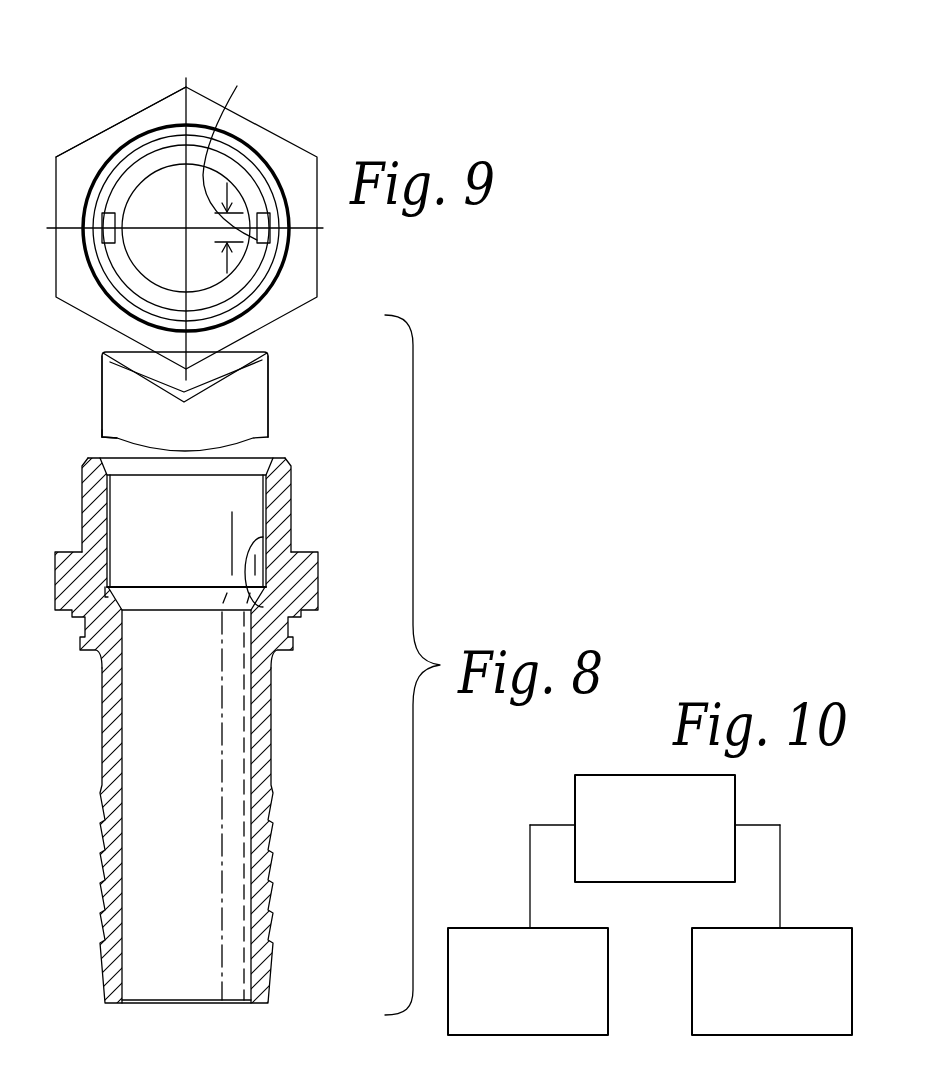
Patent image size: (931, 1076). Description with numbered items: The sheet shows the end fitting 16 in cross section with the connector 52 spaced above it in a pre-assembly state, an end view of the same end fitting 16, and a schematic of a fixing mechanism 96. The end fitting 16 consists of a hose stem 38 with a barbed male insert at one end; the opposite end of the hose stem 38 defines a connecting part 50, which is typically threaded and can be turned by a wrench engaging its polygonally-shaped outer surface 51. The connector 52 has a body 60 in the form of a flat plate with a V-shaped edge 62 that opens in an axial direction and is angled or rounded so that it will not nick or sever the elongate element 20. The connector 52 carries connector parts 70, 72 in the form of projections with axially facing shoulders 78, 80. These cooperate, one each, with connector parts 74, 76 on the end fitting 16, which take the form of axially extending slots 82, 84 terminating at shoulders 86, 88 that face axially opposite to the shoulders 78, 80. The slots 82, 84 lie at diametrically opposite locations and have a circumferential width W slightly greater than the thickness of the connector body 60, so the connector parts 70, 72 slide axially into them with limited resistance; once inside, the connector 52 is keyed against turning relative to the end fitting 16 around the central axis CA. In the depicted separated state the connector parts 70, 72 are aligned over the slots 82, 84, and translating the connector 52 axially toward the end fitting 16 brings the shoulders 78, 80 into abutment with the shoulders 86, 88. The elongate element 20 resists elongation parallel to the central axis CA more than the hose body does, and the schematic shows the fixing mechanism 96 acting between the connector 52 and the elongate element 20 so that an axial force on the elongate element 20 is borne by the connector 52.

In FIG. 8, the end fitting 16 is at (432, 730).
In FIG. 10, the elongate element 20 is at (847, 1026).
In FIG. 8, the hose stem 38 is at (258, 752).
In FIG. 9, the connecting part 50 is at (300, 193).
In FIG. 9, the polygonally-shaped outer surface 51 is at (150, 105).
In FIG. 8, the connector 52 is at (246, 386).
In FIG. 10, the connector 52 is at (579, 1026).
In FIG. 8, the connector body 60 is at (197, 379).
In FIG. 8, the V-shaped edge 62 is at (224, 367).
In FIG. 8, the connector part 70 is at (268, 405).
In FIG. 8, the connector part 72 is at (100, 397).
In FIG. 9, the connector part 74 is at (258, 204).
In FIG. 8, the connector part 74 is at (270, 603).
In FIG. 9, the connector part 76 is at (112, 213).
In FIG. 8, the connector part 76 is at (105, 550).
In FIG. 8, the shoulder 78 is at (262, 447).
In FIG. 8, the shoulder 80 is at (110, 442).
In FIG. 9, the slot 82 is at (230, 152).
In FIG. 8, the slot 82 is at (267, 513).
In FIG. 9, the slot 84 is at (118, 245).
In FIG. 8, the slot 84 is at (105, 513).
In FIG. 8, the shoulder 86 is at (295, 570).
In FIG. 8, the shoulder 88 is at (108, 586).
In FIG. 10, the fixing mechanism 96 is at (722, 822).
In FIG. 9, the central axis CA is at (186, 228).
In FIG. 9, the circumferential width W is at (219, 232).